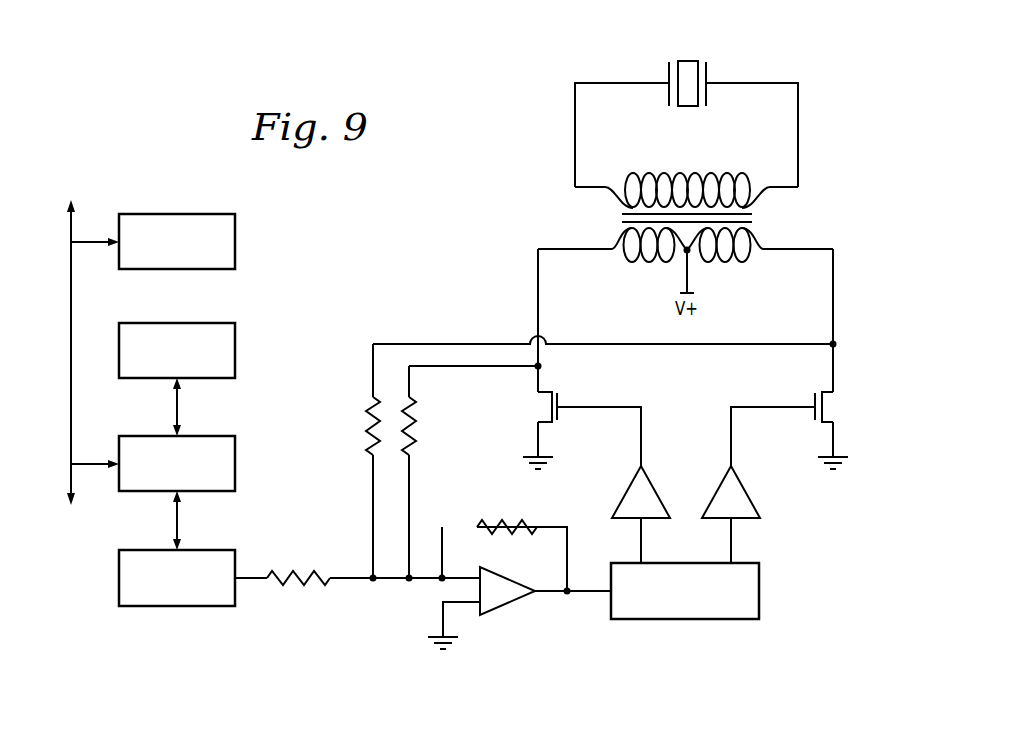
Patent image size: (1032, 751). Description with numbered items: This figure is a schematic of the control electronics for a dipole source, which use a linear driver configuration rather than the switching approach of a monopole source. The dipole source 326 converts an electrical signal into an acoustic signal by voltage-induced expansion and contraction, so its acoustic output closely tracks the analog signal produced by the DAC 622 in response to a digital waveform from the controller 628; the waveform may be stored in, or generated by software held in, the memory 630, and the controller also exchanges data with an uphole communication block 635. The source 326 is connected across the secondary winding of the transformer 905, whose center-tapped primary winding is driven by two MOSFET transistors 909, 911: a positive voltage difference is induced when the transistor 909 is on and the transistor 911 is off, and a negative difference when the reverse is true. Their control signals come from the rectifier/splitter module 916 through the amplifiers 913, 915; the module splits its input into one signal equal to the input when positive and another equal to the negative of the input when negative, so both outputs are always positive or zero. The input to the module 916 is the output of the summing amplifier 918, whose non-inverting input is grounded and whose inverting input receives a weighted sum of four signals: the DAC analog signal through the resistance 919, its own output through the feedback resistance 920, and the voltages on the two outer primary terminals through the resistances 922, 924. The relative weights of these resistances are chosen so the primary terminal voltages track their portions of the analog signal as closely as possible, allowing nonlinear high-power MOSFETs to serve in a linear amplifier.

The dipole source 326 is at (688, 60).
The transformer 905 is at (752, 218).
The transistor 909 is at (550, 391).
The transistor 911 is at (820, 391).
The amplifier 913 is at (623, 496).
The amplifier 915 is at (748, 496).
The rectifier/splitter module 916 is at (759, 590).
The summing amplifier 918 is at (505, 607).
The resistance 919 is at (305, 565).
The resistance 920 is at (509, 520).
The resistance 922 is at (366, 427).
The resistance 924 is at (384, 425).
The DAC 622 is at (193, 607).
The controller 628 is at (236, 466).
The memory 630 is at (236, 351).
The uphole communication unit 635 is at (236, 243).